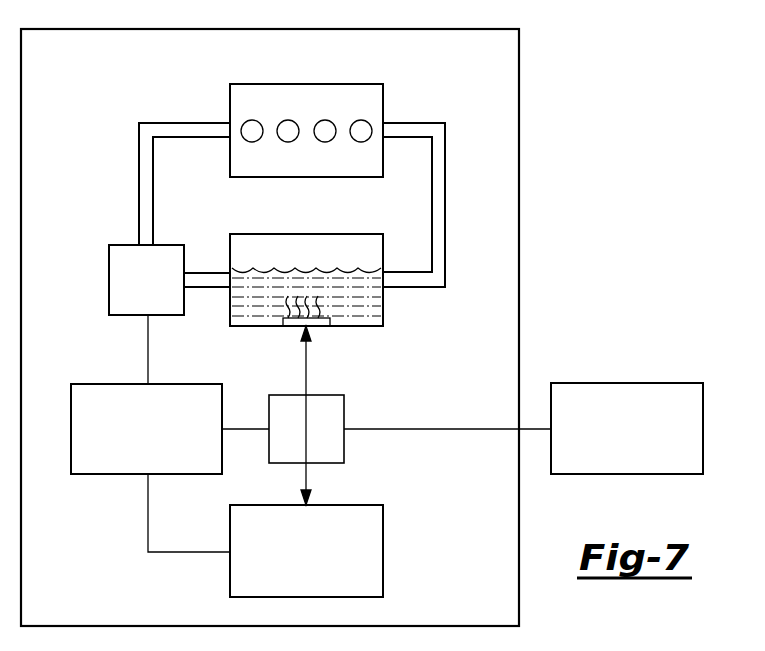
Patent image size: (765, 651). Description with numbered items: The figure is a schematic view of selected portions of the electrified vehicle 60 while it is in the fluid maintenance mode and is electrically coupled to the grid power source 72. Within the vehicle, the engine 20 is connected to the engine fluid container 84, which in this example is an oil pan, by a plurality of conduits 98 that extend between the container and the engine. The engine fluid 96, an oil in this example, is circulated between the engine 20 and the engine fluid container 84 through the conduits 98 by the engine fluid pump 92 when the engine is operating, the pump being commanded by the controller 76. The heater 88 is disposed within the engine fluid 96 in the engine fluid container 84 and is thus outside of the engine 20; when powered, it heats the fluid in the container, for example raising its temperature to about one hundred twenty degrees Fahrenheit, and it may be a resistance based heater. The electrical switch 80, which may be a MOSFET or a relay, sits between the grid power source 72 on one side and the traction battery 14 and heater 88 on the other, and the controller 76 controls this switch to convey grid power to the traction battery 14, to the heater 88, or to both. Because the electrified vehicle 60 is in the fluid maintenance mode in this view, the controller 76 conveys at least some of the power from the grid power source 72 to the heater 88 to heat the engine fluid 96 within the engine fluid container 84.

The electrified vehicle 60 is at (112, 101).
The engine 20 is at (355, 113).
The conduits 98 is at (139, 173).
The engine fluid pump 92 is at (109, 281).
The engine fluid container 84 is at (300, 234).
The engine fluid 96 is at (261, 298).
The heater 88 is at (313, 308).
The controller 76 is at (159, 457).
The electrical switch 80 is at (345, 407).
The traction battery 14 is at (319, 590).
The grid power source 72 is at (640, 468).